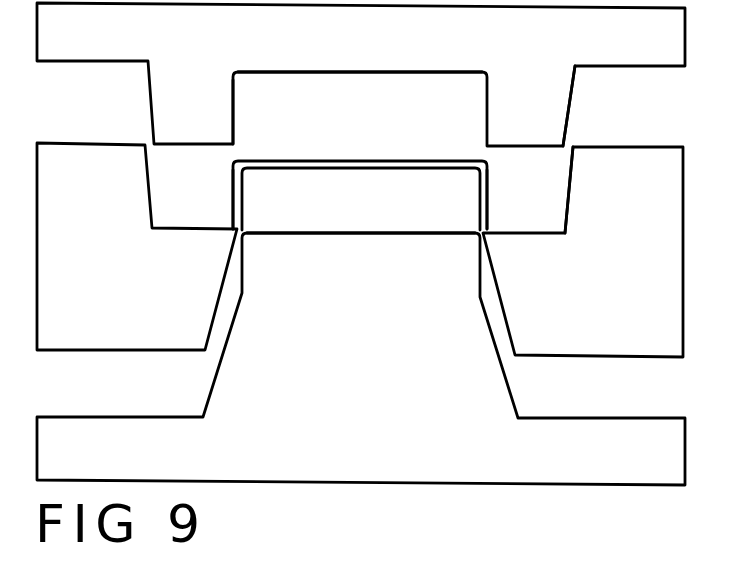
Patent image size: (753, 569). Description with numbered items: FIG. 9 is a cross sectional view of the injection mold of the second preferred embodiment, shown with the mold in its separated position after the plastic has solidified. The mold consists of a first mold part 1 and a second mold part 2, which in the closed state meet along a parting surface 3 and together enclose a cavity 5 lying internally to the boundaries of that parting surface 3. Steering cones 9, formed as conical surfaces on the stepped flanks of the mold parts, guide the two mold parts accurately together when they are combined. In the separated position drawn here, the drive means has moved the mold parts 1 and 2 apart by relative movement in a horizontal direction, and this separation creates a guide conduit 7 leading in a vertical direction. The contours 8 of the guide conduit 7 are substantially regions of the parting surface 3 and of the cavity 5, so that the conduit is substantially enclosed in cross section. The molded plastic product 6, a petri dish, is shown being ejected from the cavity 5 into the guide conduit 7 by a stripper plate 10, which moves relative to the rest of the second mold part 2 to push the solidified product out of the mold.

The first mold part 1 is at (361, 74).
The second mold part 2 is at (630, 338).
The parting surface 3 is at (150, 101).
The cavity 5 is at (374, 253).
The molded plastic product 6 is at (424, 161).
The guide conduit 7 is at (361, 199).
The contours of the guide conduit 8 is at (291, 72).
The steering cones 9 is at (571, 107).
The stripper plate 10 is at (583, 252).